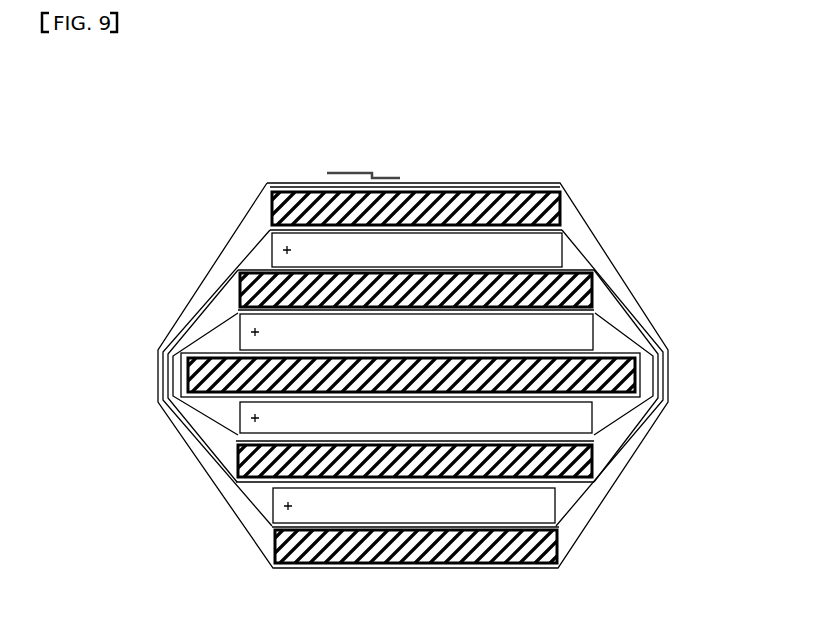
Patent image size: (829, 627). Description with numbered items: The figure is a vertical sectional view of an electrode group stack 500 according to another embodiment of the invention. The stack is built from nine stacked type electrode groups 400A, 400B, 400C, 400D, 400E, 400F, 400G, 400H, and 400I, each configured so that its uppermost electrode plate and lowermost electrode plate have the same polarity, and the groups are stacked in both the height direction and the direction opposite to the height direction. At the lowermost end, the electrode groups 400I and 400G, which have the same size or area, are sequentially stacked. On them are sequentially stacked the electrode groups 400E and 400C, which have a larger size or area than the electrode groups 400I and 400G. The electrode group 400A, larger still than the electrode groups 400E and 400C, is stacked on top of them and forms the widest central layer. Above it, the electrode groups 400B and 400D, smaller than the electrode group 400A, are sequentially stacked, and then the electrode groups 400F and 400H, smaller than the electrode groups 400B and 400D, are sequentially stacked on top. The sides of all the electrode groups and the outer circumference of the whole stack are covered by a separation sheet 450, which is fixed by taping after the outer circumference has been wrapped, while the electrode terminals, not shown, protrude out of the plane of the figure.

The electrode assembly 500 is at (108, 116).
The separation sheet 450 is at (452, 375).
The stacked type electrode group 400A is at (335, 375).
The stacked type electrode group 400B is at (331, 332).
The stacked type electrode group 400C is at (331, 417).
The stacked type electrode group 400D is at (333, 290).
The stacked type electrode group 400E is at (331, 461).
The stacked type electrode group 400F is at (319, 250).
The stacked type electrode group 400G is at (312, 505).
The stacked type electrode group 400H is at (317, 209).
The stacked type electrode group 400I is at (317, 547).